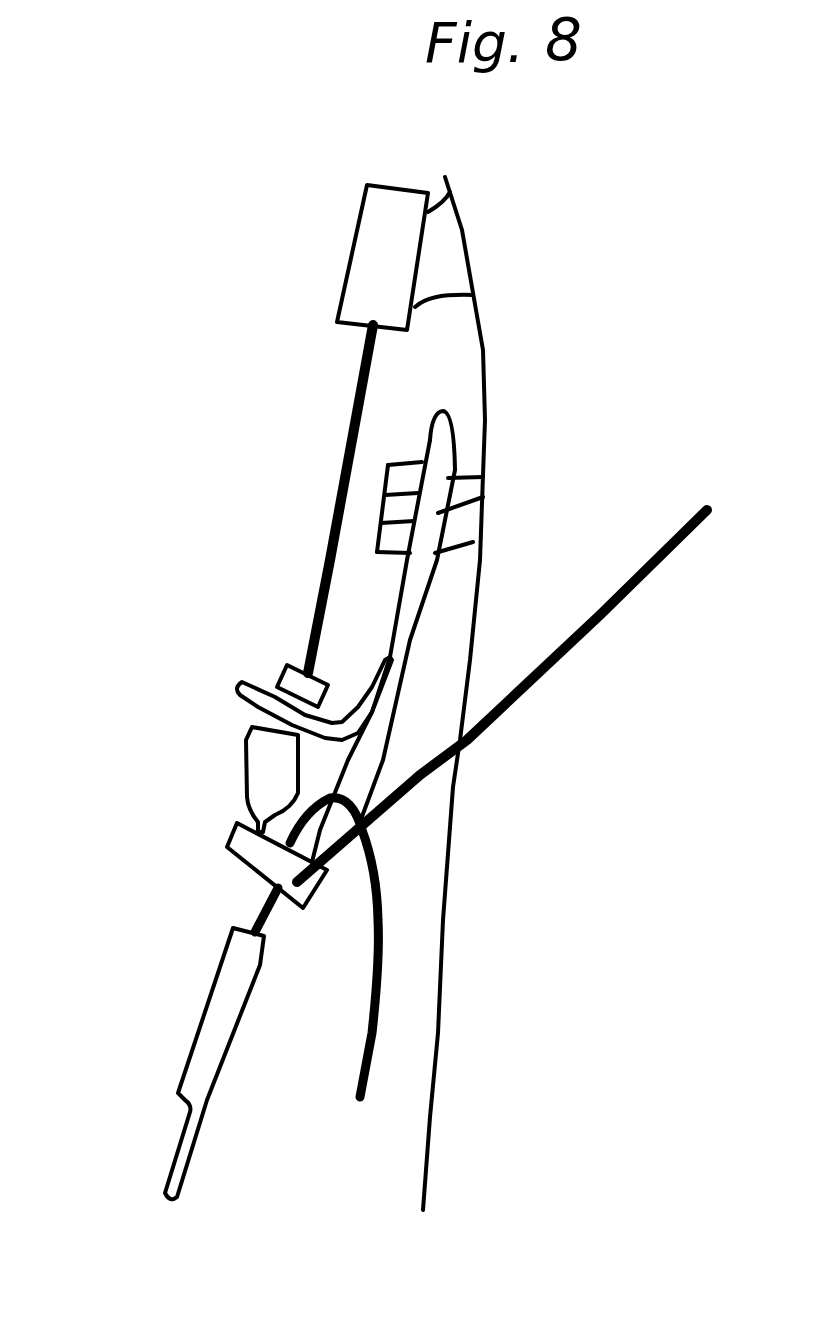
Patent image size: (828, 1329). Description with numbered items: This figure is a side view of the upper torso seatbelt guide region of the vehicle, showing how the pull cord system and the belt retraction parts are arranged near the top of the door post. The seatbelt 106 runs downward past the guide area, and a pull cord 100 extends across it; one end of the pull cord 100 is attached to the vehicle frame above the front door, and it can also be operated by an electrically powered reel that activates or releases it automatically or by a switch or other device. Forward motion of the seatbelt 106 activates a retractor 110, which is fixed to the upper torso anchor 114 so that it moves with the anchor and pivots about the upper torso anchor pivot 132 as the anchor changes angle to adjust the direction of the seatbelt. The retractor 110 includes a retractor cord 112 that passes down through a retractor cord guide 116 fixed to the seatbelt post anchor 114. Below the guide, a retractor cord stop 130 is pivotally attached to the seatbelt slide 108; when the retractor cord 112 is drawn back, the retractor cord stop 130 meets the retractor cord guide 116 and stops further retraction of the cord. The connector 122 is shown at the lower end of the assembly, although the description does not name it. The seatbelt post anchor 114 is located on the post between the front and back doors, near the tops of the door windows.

The pull cord 100 is at (553, 663).
The seatbelt 106 is at (378, 967).
The seatbelt slide 108 is at (238, 847).
The retractor 110 is at (373, 248).
The retractor cord 112 is at (352, 405).
The upper torso anchor 114 is at (413, 595).
The retractor cord guide 116 is at (273, 692).
The plug connector 122 is at (212, 1025).
The retractor cord stop 130 is at (257, 758).
The upper torso anchor pivot 132 is at (483, 492).